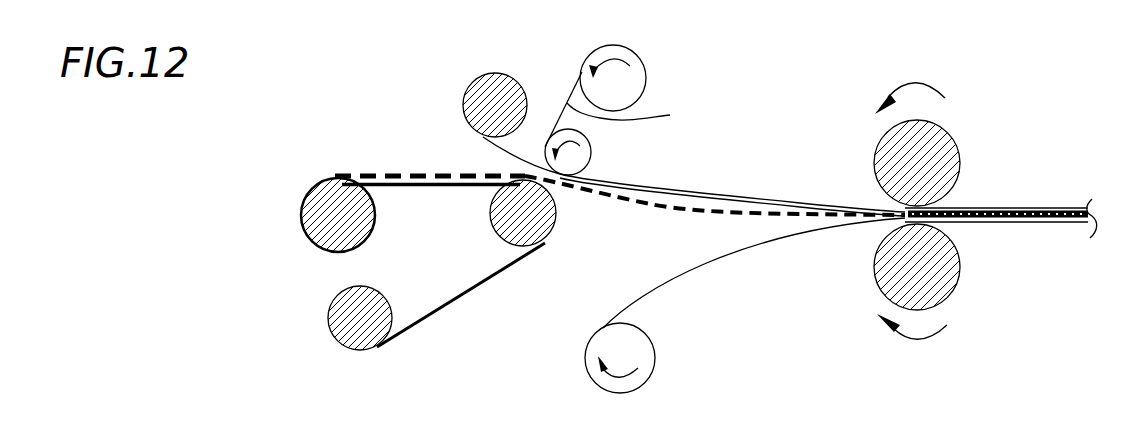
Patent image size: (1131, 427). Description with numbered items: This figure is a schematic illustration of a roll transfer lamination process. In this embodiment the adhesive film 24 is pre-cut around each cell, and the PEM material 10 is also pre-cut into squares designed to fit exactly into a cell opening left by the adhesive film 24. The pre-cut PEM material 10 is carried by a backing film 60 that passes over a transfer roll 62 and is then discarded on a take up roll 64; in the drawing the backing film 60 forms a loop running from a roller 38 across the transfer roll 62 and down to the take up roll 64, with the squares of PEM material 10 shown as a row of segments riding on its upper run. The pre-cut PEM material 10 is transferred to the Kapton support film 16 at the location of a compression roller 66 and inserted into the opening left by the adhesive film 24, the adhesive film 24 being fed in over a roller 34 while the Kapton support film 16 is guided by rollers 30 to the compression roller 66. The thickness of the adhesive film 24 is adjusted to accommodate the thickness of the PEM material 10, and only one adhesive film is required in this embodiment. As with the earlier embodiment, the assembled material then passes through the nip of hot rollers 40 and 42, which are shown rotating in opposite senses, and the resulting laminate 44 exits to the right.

The PEM material 10 is at (385, 172).
The Kapton support film 16 is at (688, 272).
The adhesive film 24 is at (483, 145).
The guide roller 30 is at (645, 70).
The roller 34 is at (474, 86).
The roller 38 is at (306, 189).
The hot roller 40 is at (873, 163).
The hot roller 42 is at (874, 270).
The laminate 44 is at (1025, 207).
The backing film 60 is at (428, 187).
The transfer roll 62 is at (553, 226).
The take up roll 64 is at (329, 310).
The compression roller 66 is at (592, 150).